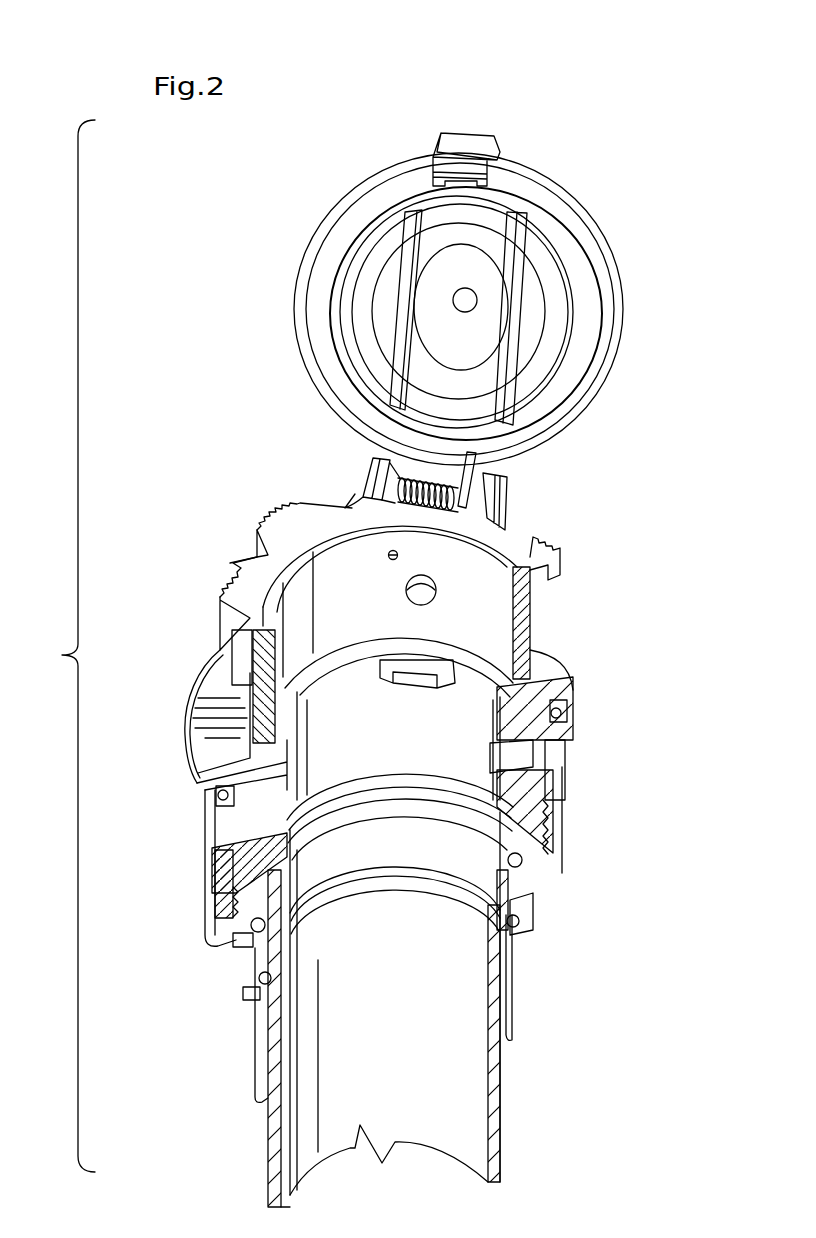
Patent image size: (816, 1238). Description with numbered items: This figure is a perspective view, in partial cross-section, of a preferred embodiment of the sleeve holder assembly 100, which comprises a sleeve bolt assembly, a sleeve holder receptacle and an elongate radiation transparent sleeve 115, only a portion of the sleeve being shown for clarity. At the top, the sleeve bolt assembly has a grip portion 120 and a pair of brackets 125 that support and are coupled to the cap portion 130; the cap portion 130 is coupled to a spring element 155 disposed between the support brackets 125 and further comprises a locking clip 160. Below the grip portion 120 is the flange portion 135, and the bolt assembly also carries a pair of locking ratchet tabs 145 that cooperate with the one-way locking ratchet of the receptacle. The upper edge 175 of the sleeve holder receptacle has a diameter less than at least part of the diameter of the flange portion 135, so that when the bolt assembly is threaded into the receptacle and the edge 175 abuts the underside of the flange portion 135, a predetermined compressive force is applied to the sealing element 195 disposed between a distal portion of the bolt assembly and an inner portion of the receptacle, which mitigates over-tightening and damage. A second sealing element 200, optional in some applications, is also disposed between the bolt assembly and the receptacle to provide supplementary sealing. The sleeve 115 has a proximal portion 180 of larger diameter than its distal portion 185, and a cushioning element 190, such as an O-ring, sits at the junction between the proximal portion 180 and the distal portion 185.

The sleeve holder assembly 100 is at (54, 646).
The elongate radiation transparent sleeve 115 is at (231, 1151).
The grip portion 120 is at (272, 515).
The brackets 125 is at (372, 484).
The cap portion 130 is at (610, 252).
The flange portion 135 is at (545, 665).
The locking ratchet tabs 145 is at (235, 836).
The spring element 155 is at (507, 512).
The locking clip 160 is at (455, 147).
The upper edge 175 is at (215, 795).
The proximal portion 180 is at (520, 888).
The distal portion 185 is at (498, 1092).
The cushioning element 190 is at (260, 986).
The sealing element 195 is at (245, 922).
The second sealing element 200 is at (223, 800).